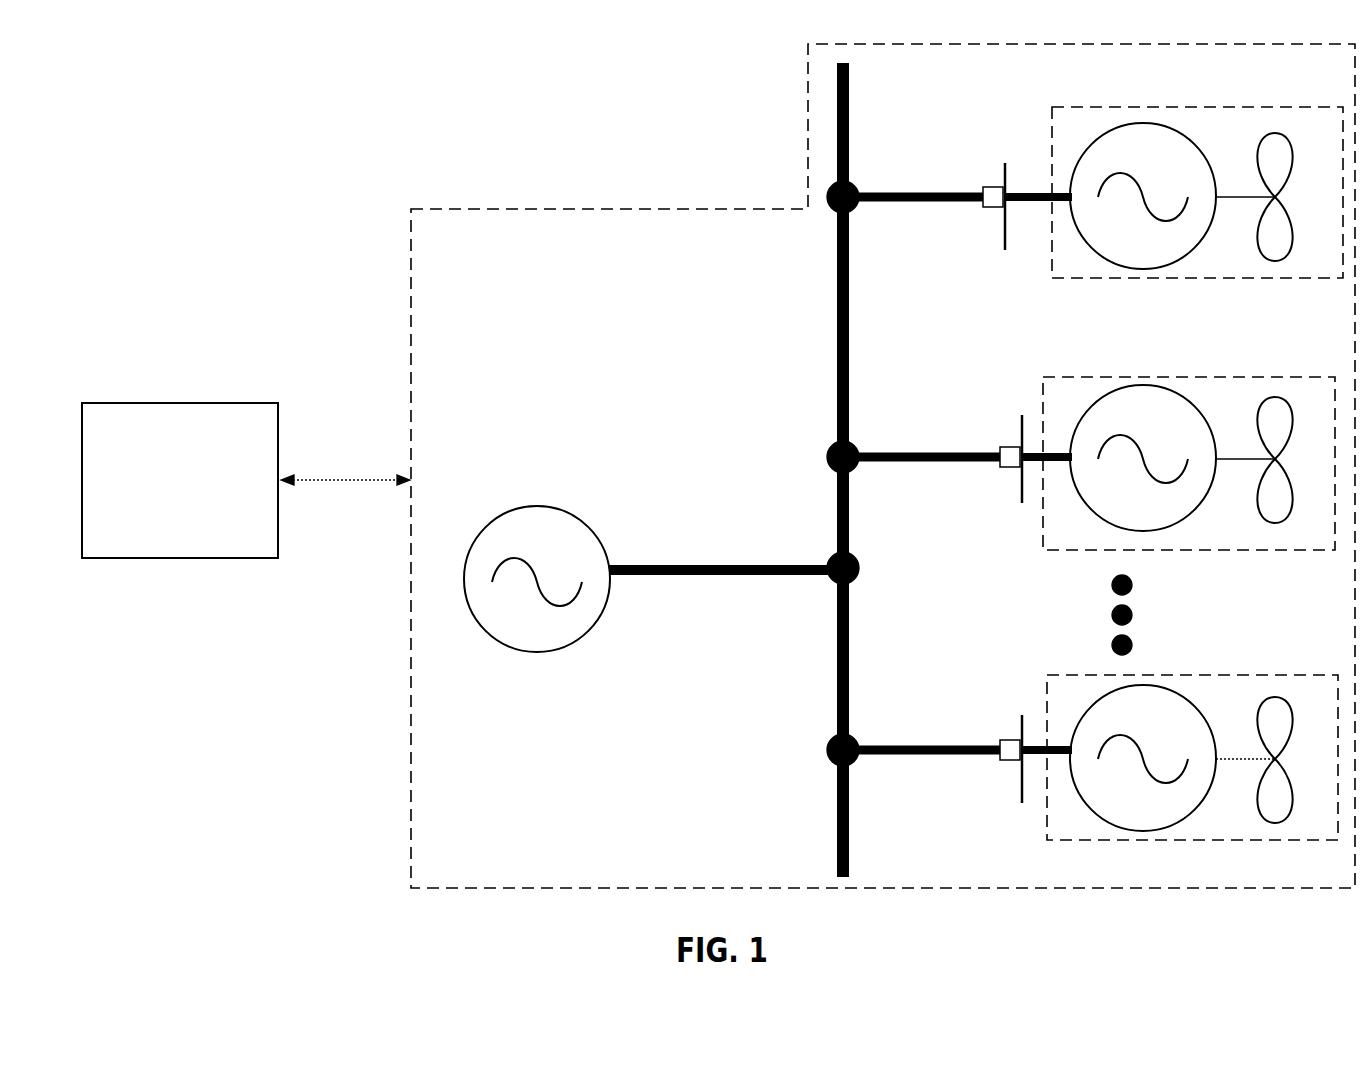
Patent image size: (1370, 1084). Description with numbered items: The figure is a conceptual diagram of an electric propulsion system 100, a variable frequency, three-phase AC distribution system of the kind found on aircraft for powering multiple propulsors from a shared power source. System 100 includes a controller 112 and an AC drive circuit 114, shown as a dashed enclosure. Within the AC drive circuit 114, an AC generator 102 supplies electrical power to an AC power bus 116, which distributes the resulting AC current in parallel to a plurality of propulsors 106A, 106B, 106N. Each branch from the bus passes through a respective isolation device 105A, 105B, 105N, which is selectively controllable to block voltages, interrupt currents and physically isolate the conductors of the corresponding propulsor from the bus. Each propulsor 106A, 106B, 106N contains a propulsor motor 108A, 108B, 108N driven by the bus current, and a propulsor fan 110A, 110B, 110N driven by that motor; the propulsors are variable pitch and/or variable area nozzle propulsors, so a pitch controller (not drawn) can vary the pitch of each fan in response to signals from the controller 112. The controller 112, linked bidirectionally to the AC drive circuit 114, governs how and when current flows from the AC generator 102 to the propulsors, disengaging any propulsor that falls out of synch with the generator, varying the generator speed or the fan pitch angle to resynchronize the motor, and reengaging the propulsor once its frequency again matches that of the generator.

The electric propulsion system 100 is at (197, 99).
The AC generator 102 is at (517, 544).
The isolation device 105A is at (983, 188).
The isolation device 105B is at (1000, 467).
The isolation device 105N is at (1000, 762).
The propulsor 106A is at (1071, 144).
The propulsor 106B is at (1064, 409).
The propulsor 106N is at (1066, 706).
The propulsor motor 108A is at (1117, 157).
The propulsor motor 108B is at (1117, 419).
The propulsor motor 108N is at (1117, 719).
The propulsor fan 110A is at (1271, 136).
The propulsor fan 110B is at (1270, 398).
The propulsor fan 110N is at (1270, 698).
The controller 112 is at (160, 492).
The AC drive circuit 114 is at (537, 349).
The AC power bus 116 is at (694, 565).